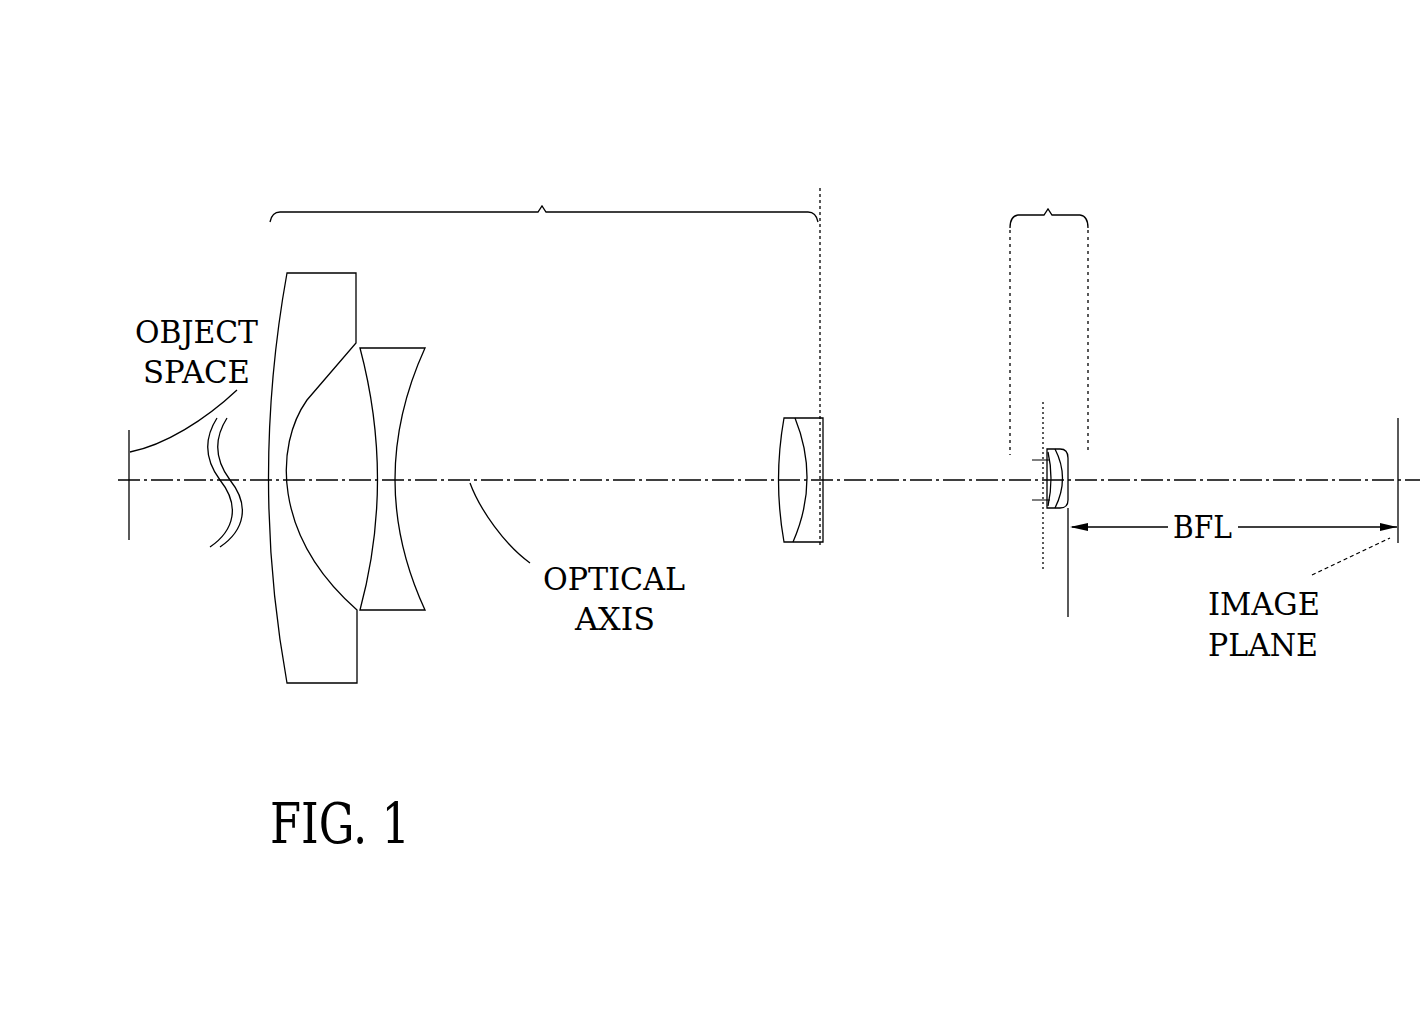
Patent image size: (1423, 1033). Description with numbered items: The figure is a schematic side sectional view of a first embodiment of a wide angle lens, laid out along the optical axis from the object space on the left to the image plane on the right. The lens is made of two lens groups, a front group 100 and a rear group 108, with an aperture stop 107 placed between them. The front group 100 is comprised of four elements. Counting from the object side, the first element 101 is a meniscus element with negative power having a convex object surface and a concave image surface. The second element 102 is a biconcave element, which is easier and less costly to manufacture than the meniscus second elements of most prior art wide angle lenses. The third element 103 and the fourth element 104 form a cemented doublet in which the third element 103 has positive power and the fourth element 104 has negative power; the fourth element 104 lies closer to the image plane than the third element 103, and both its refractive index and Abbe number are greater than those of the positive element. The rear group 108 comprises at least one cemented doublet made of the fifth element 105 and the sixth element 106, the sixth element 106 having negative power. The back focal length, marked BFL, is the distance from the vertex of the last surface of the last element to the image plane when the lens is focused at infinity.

The front group 100 is at (563, 155).
The first element 101 is at (325, 278).
The second element 102 is at (408, 352).
The third element 103 is at (762, 460).
The fourth element 104 is at (838, 444).
The fifth element 105 is at (1024, 490).
The sixth element 106 is at (1086, 503).
The aperture stop 107 is at (1045, 566).
The rear group 108 is at (1130, 133).